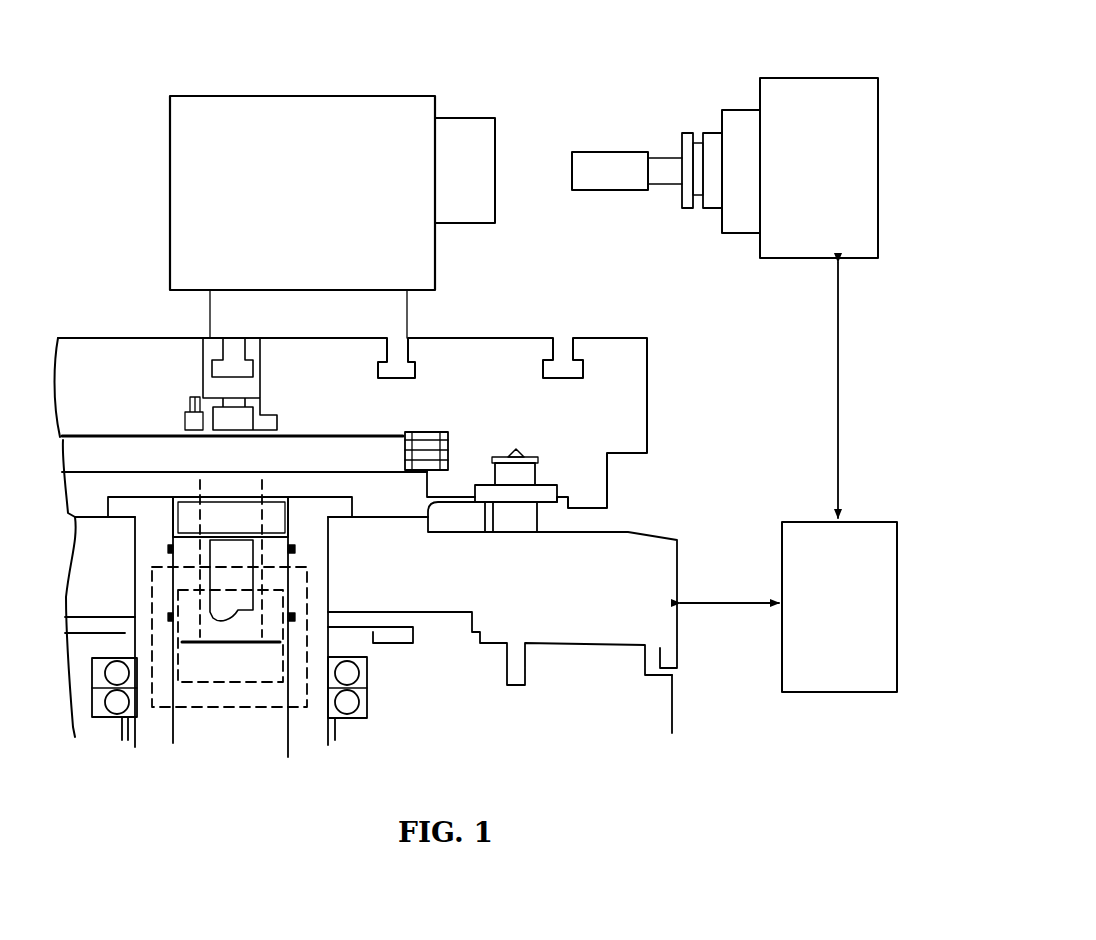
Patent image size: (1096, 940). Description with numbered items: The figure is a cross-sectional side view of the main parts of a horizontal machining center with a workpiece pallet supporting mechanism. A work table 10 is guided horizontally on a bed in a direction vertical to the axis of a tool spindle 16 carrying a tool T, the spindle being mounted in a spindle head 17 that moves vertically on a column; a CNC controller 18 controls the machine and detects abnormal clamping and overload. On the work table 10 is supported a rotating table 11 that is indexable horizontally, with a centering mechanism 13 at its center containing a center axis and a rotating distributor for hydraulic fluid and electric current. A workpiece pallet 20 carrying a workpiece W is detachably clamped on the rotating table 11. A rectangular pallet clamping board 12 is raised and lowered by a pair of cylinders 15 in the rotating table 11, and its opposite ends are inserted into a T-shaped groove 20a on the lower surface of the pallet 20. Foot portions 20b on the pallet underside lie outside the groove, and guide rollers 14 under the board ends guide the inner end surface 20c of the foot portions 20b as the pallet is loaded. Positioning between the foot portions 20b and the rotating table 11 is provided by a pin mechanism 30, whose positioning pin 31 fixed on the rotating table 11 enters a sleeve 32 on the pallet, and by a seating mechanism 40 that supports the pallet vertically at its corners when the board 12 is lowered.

The workpiece W is at (188, 200).
The tool T is at (604, 177).
The work table 10 is at (647, 710).
The rotating table 11 is at (660, 577).
The pallet clamping board 12 is at (143, 452).
The centering mechanism 13 is at (243, 580).
The guide rollers 14 is at (420, 486).
The cylinders 15 is at (260, 713).
The tool spindle 16 is at (735, 127).
The spindle head 17 is at (822, 100).
The CNC controller 18 is at (873, 540).
The workpiece pallet 20 is at (623, 378).
The T-shaped groove 20a is at (413, 430).
The foot portions 20b is at (590, 455).
The inner end surface 20c is at (424, 488).
The pin mechanism 30 is at (518, 541).
The positioning pin 31 is at (525, 523).
The sleeve 32 is at (552, 487).
The seating mechanism 40 is at (463, 538).